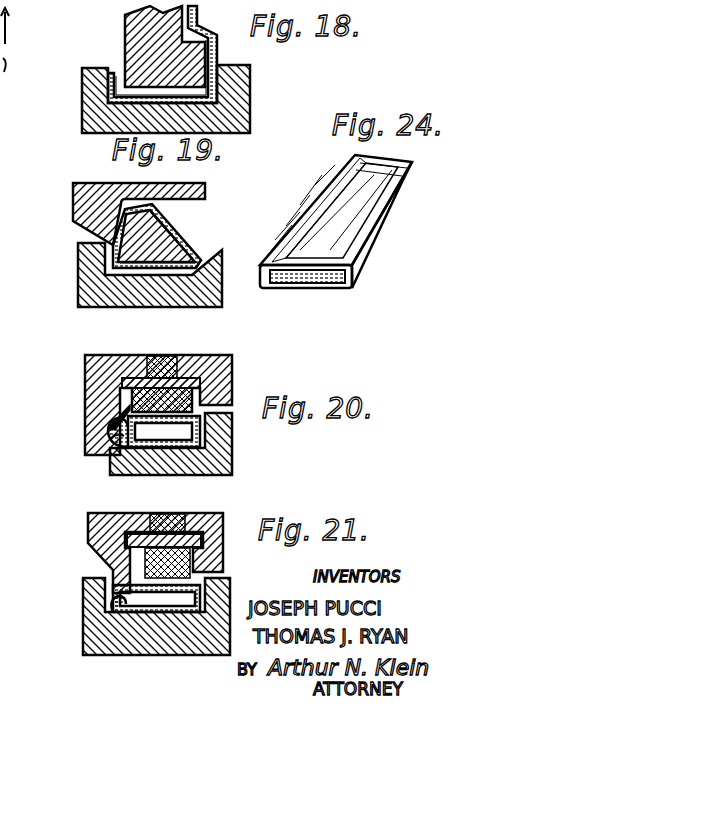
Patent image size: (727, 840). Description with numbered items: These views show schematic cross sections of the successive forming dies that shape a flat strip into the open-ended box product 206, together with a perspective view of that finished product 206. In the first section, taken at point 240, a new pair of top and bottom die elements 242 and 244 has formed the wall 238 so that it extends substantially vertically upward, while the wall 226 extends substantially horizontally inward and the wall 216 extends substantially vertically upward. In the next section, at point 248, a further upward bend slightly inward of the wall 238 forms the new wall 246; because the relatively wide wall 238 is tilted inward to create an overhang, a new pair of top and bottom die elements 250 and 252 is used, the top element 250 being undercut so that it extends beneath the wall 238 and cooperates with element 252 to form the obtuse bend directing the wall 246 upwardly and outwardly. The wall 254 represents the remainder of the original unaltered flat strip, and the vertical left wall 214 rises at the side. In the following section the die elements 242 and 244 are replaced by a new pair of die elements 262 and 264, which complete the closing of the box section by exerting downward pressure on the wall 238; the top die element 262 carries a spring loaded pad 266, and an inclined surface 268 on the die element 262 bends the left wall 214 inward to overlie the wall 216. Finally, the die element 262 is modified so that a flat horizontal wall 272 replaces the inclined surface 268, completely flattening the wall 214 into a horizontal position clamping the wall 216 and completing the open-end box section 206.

In FIG. 24, the product 206 is at (372, 194).
In FIG. 18, the left wall 214 is at (112, 81).
In FIG. 19, the left wall 214 is at (114, 256).
In FIG. 24, the left wall 214 is at (296, 238).
In FIG. 20, the left wall 214 is at (112, 418).
In FIG. 18, the wall 216 is at (68, 39).
In FIG. 19, the wall 216 is at (122, 210).
In FIG. 24, the wall 216 is at (281, 286).
In FIG. 20, the wall 216 is at (112, 440).
In FIG. 18, the wall 226 is at (204, 9).
In FIG. 19, the wall 226 is at (165, 212).
In FIG. 24, the wall 226 is at (312, 285).
In FIG. 20, the wall 226 is at (166, 452).
In FIG. 18, the wall 238 is at (230, 57).
In FIG. 19, the wall 238 is at (195, 240).
In FIG. 24, the wall 238 is at (338, 228).
In FIG. 18, the point 240 is at (222, 78).
In FIG. 18, the top die element 242 is at (105, 36).
In FIG. 18, the bottom die element 244 is at (92, 113).
In FIG. 24, the wall 246 is at (354, 280).
In FIG. 20, the wall 246 is at (205, 432).
In FIG. 19, the point 248 is at (181, 288).
In FIG. 19, the top die element 250 is at (75, 199).
In FIG. 19, the bottom die element 252 is at (80, 288).
In FIG. 18, the wall 254 is at (110, 9).
In FIG. 19, the wall 254 is at (139, 278).
In FIG. 24, the wall 254 is at (302, 290).
In FIG. 20, the wall 254 is at (110, 456).
In FIG. 20, the top die element 262 is at (234, 357).
In FIG. 21, the top die element 262 is at (224, 512).
In FIG. 20, the bottom die element 264 is at (230, 460).
In FIG. 21, the bottom die element 264 is at (147, 643).
In FIG. 20, the spring loaded pad 266 is at (205, 390).
In FIG. 20, the inclined surface 268 is at (128, 404).
In FIG. 21, the flat horizontal wall 272 is at (110, 600).